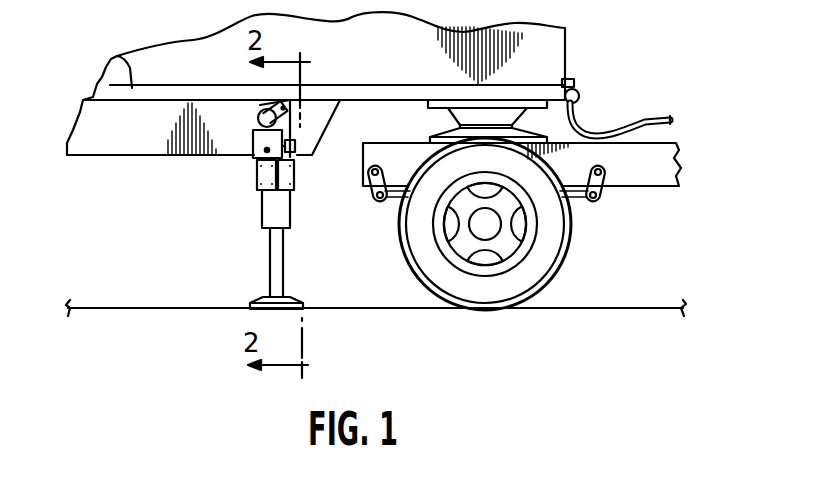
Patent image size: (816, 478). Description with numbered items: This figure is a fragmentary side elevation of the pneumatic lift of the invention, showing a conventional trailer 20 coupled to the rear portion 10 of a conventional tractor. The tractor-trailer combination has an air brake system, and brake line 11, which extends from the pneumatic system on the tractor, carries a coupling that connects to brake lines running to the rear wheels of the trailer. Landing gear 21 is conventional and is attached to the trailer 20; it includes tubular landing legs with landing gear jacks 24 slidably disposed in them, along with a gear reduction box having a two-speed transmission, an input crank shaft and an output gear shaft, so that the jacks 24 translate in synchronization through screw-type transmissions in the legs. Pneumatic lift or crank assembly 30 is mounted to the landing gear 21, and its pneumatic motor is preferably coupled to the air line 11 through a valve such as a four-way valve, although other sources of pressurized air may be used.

The rear portion of tractor 10 is at (648, 186).
The brake line 11 is at (643, 113).
The trailer 20 is at (118, 57).
The landing gear 21 is at (256, 213).
The landing gear jack 24 is at (268, 258).
The pneumatic lift assembly 30 is at (250, 168).